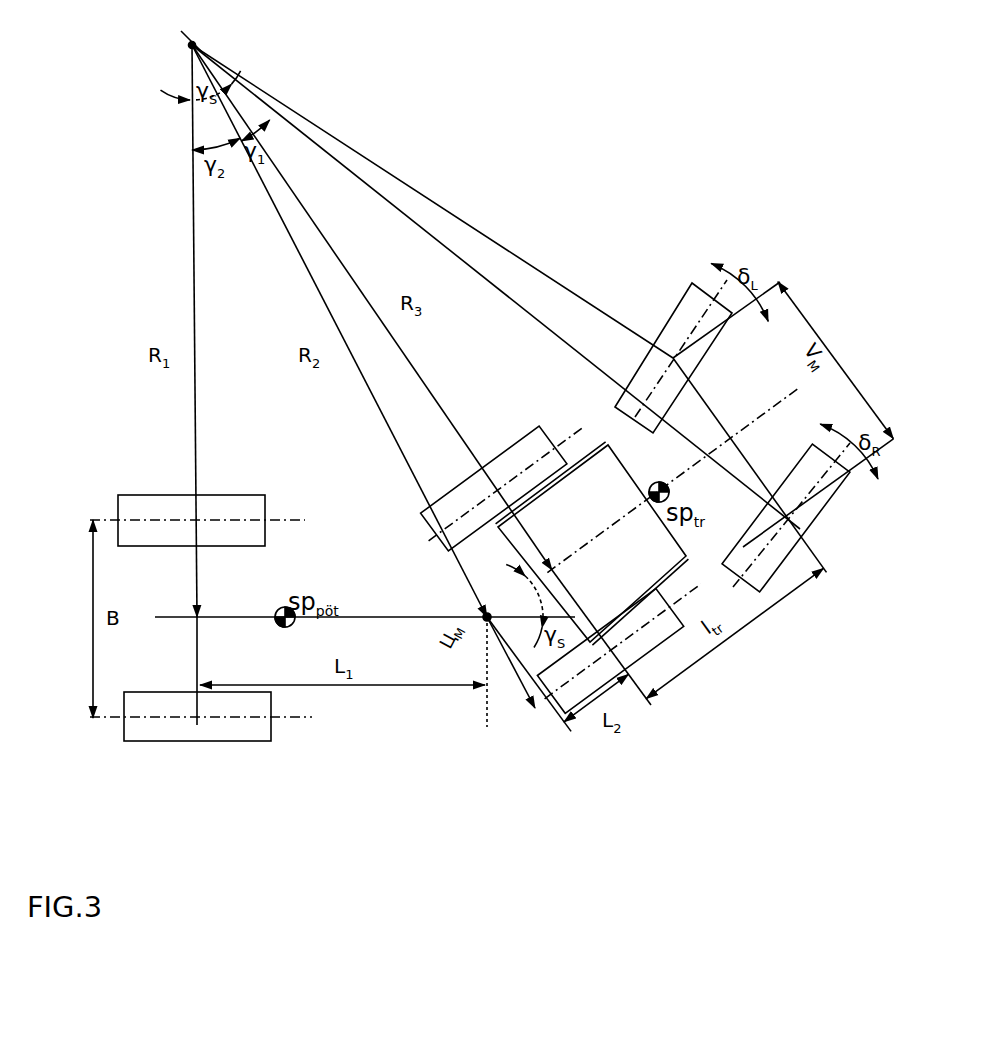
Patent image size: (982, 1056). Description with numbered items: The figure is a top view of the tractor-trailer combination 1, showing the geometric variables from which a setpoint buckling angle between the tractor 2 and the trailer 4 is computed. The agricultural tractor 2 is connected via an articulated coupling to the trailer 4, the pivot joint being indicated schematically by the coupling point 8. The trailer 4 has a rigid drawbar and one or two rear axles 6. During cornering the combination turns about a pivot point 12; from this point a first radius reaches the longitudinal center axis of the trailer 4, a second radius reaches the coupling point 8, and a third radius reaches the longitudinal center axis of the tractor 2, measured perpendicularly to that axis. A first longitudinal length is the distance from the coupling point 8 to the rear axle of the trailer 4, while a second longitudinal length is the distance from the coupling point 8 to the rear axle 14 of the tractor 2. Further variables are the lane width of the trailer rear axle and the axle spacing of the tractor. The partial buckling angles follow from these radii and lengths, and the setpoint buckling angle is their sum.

The tractor-trailer combination 1 is at (528, 145).
The tractor 2 is at (768, 637).
The trailer 4 is at (340, 737).
The rear axles 6 is at (196, 650).
The coupling point 8 is at (486, 614).
The pivot point 12 is at (197, 43).
The rear axle of the tractor vehicle 14 is at (512, 503).